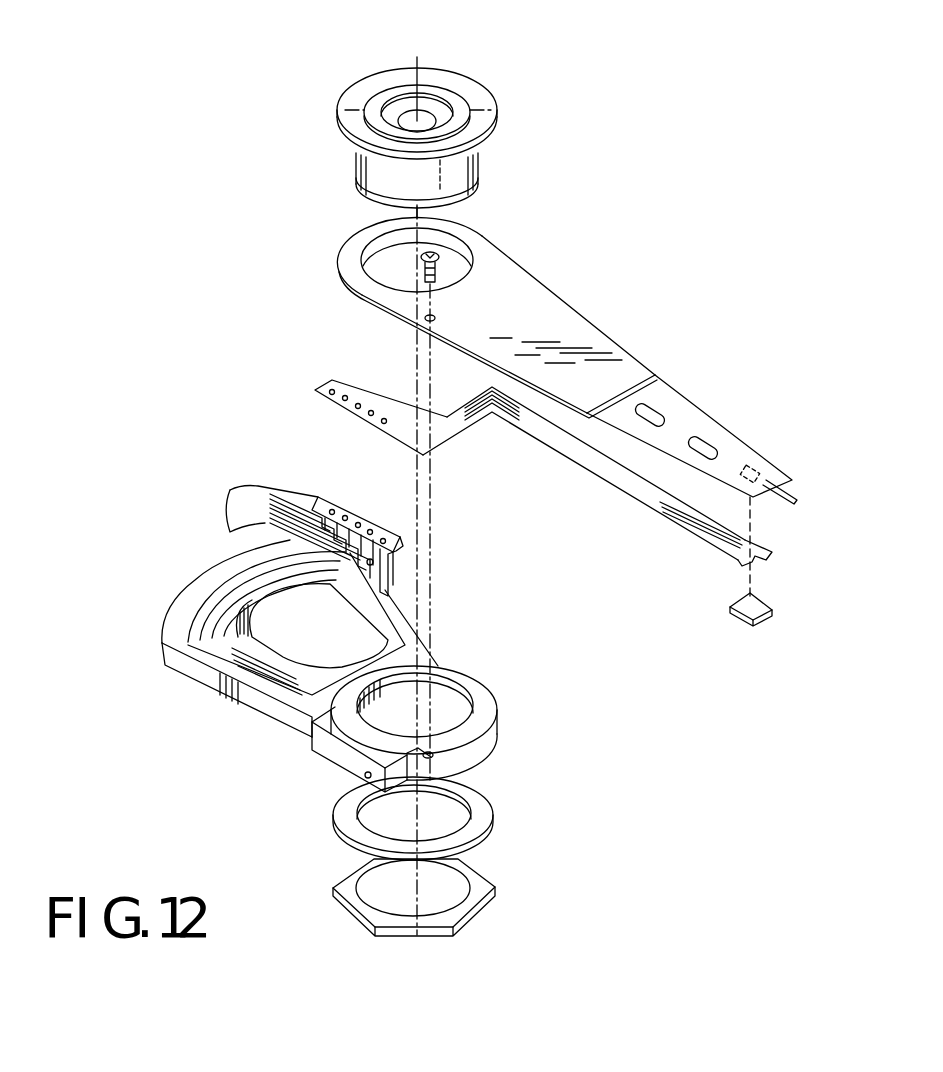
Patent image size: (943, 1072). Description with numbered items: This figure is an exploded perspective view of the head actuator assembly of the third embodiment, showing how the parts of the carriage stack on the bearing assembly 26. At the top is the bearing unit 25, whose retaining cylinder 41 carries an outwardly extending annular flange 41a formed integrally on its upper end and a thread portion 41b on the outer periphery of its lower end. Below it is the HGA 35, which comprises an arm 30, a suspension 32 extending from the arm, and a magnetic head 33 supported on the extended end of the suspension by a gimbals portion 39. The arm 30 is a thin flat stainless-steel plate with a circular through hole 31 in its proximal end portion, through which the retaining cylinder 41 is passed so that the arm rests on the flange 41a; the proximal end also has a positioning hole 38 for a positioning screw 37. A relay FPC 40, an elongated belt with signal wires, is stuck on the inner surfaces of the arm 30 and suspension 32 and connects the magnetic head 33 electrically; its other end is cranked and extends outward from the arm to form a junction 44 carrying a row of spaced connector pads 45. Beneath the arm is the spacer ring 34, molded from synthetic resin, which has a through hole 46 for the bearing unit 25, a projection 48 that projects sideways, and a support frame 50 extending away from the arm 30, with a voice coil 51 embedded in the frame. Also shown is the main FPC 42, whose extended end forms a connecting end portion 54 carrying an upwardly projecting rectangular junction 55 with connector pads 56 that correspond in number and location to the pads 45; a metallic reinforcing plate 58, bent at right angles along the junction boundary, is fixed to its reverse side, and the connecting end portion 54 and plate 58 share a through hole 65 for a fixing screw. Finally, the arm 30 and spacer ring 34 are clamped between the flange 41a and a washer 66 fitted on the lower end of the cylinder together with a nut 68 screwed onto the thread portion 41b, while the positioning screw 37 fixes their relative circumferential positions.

The bearing unit 25 is at (478, 78).
The bearing assembly 26 is at (311, 147).
The arm 30 is at (550, 302).
The circular through hole 31 is at (370, 258).
The suspension 32 is at (700, 410).
The magnetic head 33 is at (765, 618).
The spacer ring 34 is at (490, 714).
The HGA 35 is at (658, 348).
The positioning screw 37 is at (455, 255).
The positioning hole 38 is at (440, 318).
The gimbals portion 39 is at (760, 475).
The relay FPC 40 is at (572, 455).
The retaining cylinder 41 is at (468, 165).
The annular flange 41a is at (355, 95).
The thread portion 41b is at (358, 187).
The main FPC 42 is at (268, 490).
The junction 44 is at (356, 420).
The connector pads 45 is at (352, 402).
The through hole 46 is at (462, 700).
The projection 48 is at (323, 748).
The support frame 50 is at (188, 674).
The voice coil 51 is at (225, 604).
The connecting end portion 54 is at (388, 582).
The junction 55 is at (318, 497).
The connector pads 56 is at (383, 538).
The reinforcing plate 58 is at (395, 565).
The through hole 65 is at (368, 566).
The washer 66 is at (478, 817).
The nut 68 is at (485, 893).